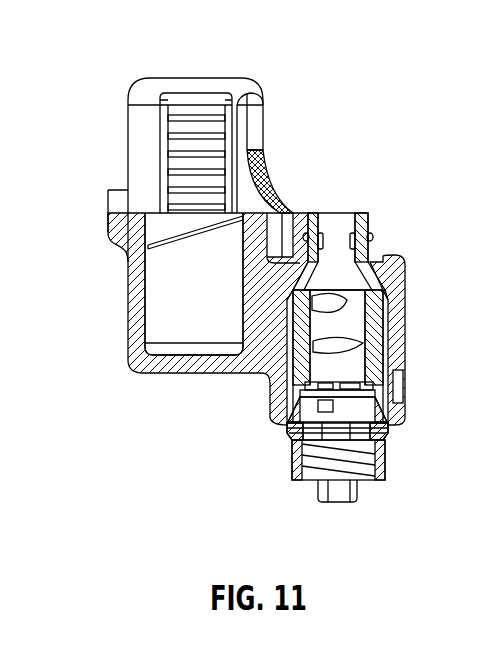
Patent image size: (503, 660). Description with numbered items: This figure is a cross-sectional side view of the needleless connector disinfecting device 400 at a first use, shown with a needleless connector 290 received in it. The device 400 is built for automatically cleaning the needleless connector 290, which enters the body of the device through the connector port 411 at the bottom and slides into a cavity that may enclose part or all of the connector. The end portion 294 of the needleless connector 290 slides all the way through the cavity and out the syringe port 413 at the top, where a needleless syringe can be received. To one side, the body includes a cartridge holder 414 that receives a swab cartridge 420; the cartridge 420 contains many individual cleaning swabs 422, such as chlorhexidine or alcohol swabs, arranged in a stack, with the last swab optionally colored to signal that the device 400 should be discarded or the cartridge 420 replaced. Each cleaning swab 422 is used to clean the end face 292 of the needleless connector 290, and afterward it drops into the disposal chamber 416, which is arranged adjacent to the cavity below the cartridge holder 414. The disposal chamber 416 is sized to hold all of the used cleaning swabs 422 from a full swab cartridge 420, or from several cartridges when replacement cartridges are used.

The needleless connector disinfecting device 400 is at (125, 46).
The swab cartridge 420 is at (162, 132).
The cleaning swab 422 is at (178, 243).
The cartridge holder 414 is at (130, 323).
The disposal chamber 416 is at (200, 330).
The end face 292 is at (337, 212).
The end portion 294 is at (362, 238).
The syringe port 413 is at (380, 260).
The connector port 411 is at (290, 431).
The needleless connector 290 is at (383, 452).